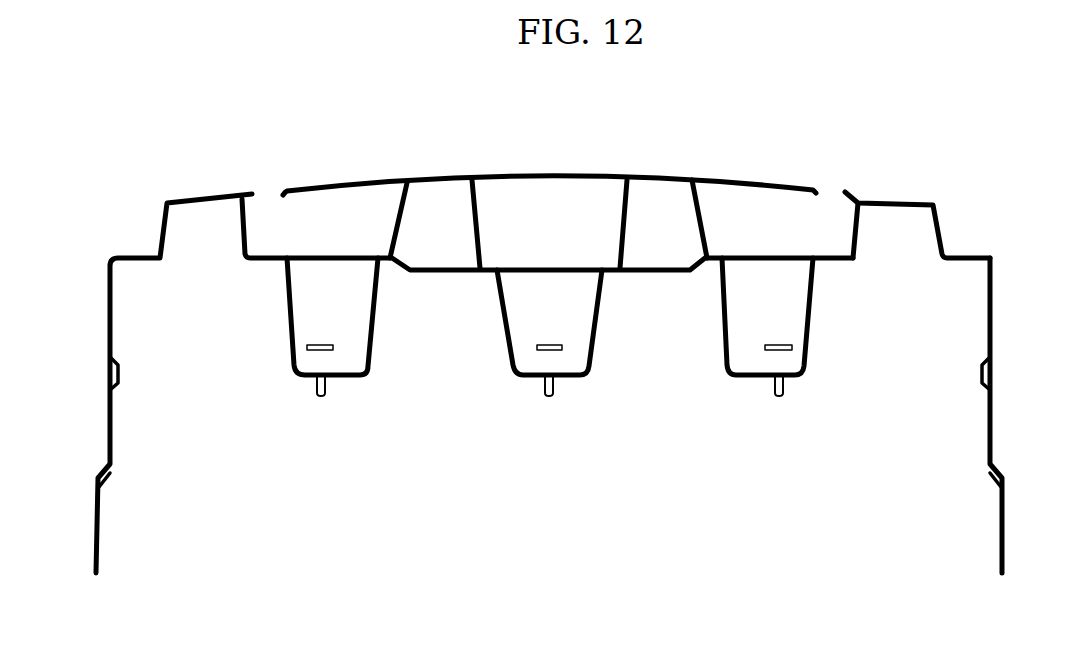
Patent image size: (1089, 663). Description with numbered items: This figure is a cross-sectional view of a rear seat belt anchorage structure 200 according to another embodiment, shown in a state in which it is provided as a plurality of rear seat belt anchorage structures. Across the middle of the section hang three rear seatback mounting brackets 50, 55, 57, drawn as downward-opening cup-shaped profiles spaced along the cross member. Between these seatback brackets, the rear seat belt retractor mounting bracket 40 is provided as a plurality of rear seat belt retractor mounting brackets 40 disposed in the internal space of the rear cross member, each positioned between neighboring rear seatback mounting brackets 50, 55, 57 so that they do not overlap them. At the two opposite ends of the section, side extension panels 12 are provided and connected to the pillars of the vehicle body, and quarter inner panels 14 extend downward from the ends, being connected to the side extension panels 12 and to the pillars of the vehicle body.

The rear seat belt anchorage structure 200 is at (462, 107).
The side extension panel 12 is at (895, 193).
The quarter inner panel 14 is at (995, 290).
The rear seat belt retractor mounting bracket 40 is at (478, 200).
The rear seatback mounting bracket 50 is at (810, 333).
The rear seatback mounting bracket 55 is at (590, 346).
The rear seatback mounting bracket 57 is at (375, 348).